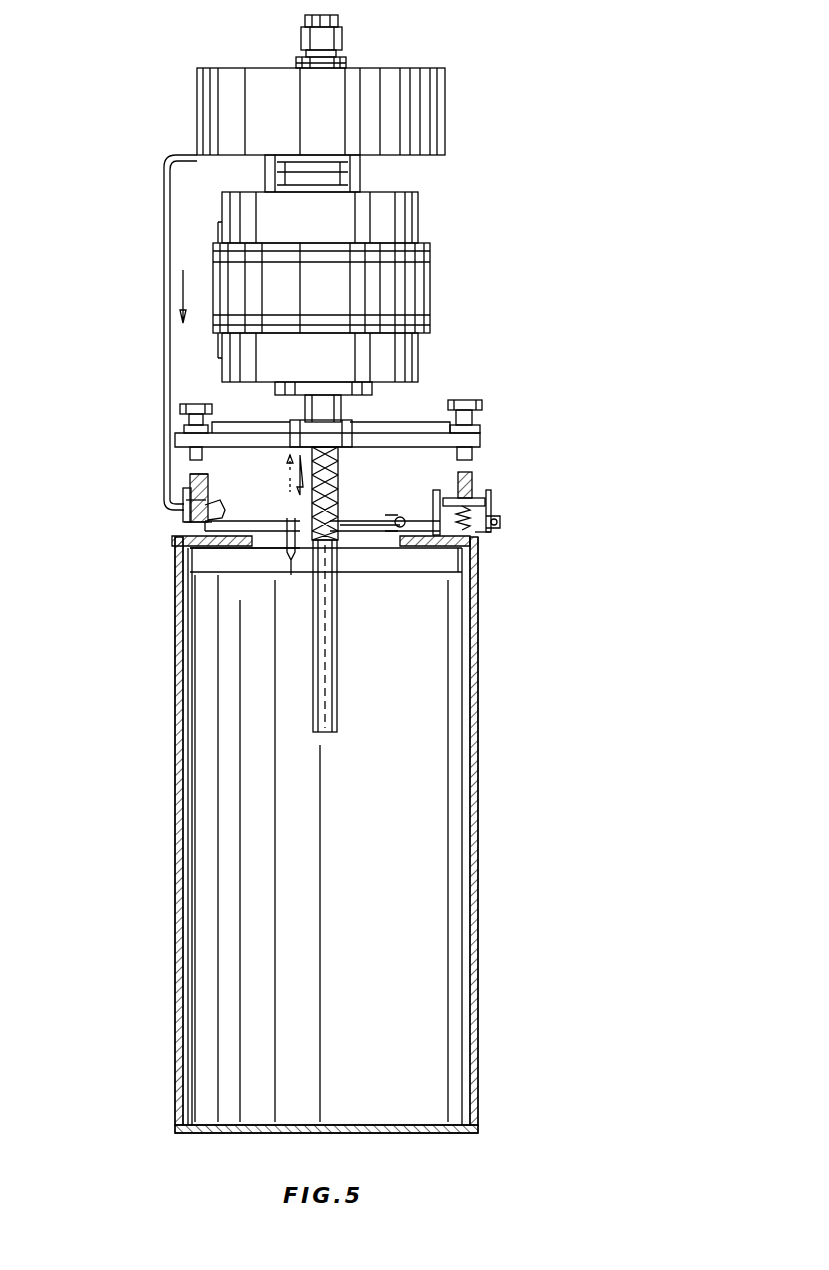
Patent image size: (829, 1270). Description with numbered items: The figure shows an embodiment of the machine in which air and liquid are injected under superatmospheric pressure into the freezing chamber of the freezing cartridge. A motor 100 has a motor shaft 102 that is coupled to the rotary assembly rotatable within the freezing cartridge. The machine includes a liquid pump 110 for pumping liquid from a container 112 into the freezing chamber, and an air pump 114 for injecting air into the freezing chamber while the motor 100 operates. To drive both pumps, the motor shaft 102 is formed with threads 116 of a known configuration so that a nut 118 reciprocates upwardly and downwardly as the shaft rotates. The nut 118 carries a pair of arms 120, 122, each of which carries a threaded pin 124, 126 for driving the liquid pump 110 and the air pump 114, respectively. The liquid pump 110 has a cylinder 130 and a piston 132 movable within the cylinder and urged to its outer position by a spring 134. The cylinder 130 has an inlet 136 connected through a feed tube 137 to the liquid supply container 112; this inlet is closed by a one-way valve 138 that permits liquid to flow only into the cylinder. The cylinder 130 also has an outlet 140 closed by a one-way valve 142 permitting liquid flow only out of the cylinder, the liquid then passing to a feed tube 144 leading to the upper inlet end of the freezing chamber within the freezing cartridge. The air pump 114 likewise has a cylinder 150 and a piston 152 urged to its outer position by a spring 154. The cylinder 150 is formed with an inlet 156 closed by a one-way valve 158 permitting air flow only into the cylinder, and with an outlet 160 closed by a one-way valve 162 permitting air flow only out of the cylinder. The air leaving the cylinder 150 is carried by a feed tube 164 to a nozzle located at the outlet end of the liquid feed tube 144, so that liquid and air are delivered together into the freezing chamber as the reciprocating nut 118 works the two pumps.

The motor 100 is at (430, 286).
The motor shaft 102 is at (337, 687).
The liquid pump 110 is at (178, 484).
The container 112 is at (436, 112).
The air pump 114 is at (476, 478).
The threads 116 is at (338, 470).
The nut 118 is at (352, 424).
The arm 120 is at (280, 430).
The arm 122 is at (420, 422).
The threaded pin 124 is at (192, 402).
The threaded pin 126 is at (482, 405).
The cylinder 130 is at (200, 480).
The piston 132 is at (192, 470).
The spring 134 is at (180, 500).
The inlet 136 is at (186, 516).
The feed tube 137 is at (164, 332).
The one-way valve 138 is at (190, 530).
The outlet 140 is at (210, 540).
The one-way valve 142 is at (222, 512).
The feed tube 144 is at (287, 560).
The cylinder 150 is at (492, 500).
The piston 152 is at (470, 506).
The spring 154 is at (492, 520).
The inlet 156 is at (488, 535).
The one-way valve 158 is at (498, 524).
The outlet 160 is at (432, 546).
The one-way valve 162 is at (405, 505).
The feed tube 164 is at (382, 540).